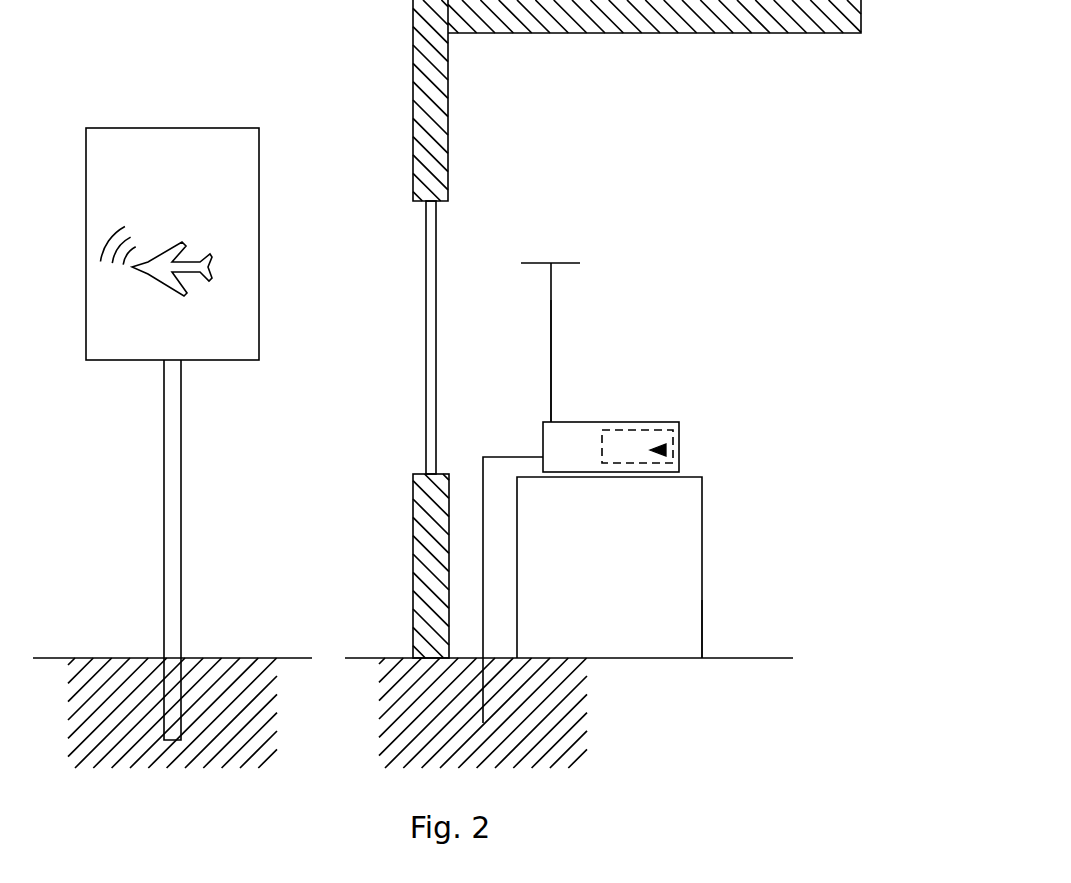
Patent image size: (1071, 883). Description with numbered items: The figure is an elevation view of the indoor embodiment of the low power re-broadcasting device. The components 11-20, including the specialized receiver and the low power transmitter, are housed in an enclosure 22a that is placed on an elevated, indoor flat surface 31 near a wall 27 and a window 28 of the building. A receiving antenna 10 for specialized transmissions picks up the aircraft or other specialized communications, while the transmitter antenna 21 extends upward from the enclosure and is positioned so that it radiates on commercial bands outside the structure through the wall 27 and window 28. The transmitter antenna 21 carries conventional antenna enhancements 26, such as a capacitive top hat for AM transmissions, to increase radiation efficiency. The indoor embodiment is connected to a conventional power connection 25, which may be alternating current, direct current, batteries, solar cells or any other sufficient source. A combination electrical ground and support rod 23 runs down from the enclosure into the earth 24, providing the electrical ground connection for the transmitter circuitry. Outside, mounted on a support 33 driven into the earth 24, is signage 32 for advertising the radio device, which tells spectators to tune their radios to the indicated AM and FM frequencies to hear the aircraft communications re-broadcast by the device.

The receiving antenna for specialized transmissions 10 is at (673, 423).
The components of the receiver/transmitter system 11-20 is at (664, 450).
The transmitter antenna 21 is at (553, 369).
The indoor embodiment 22a is at (681, 462).
The combination electrical ground and support rod 23 is at (498, 455).
The earth (terra firma) 24 is at (272, 736).
The conventional power connection 25 is at (670, 476).
The conventional antenna enhancements 26 is at (568, 260).
The wall of structure 27 is at (448, 182).
The window of structure 28 is at (438, 318).
The elevated, indoor flat surface 31 is at (703, 647).
The signage for advertising radio device 32 is at (188, 128).
The support for signage 33 is at (183, 538).